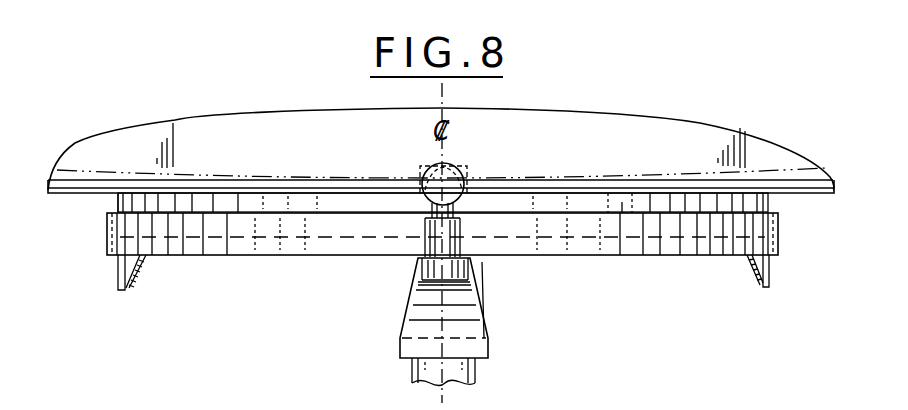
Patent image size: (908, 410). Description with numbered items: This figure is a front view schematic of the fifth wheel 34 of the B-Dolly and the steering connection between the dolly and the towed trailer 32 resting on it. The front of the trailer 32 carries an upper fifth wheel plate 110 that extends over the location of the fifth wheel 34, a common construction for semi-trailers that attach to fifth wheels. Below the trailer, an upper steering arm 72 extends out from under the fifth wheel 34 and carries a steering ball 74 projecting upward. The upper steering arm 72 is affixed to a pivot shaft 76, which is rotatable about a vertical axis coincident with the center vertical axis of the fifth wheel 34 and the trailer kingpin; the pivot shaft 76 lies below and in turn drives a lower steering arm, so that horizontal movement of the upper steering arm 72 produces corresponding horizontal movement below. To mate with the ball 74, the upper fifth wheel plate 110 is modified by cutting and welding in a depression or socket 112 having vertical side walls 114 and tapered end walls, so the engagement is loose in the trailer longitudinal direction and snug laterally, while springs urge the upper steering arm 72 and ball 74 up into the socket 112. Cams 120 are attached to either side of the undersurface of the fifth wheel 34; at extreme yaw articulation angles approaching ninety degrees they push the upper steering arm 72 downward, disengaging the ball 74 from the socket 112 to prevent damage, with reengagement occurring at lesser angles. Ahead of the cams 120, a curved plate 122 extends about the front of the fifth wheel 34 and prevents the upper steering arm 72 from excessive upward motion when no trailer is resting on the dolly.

The trailer 32 is at (787, 162).
The fifth wheel 34 is at (115, 203).
The upper steering arm 72 is at (470, 295).
The steering ball 74 is at (450, 180).
The pivot shaft 76 is at (475, 373).
The upper fifth wheel plate 110 is at (805, 192).
The socket 112 is at (458, 164).
The vertical side walls 114 is at (427, 165).
The cams 120 is at (133, 275).
The curved plate 122 is at (780, 232).